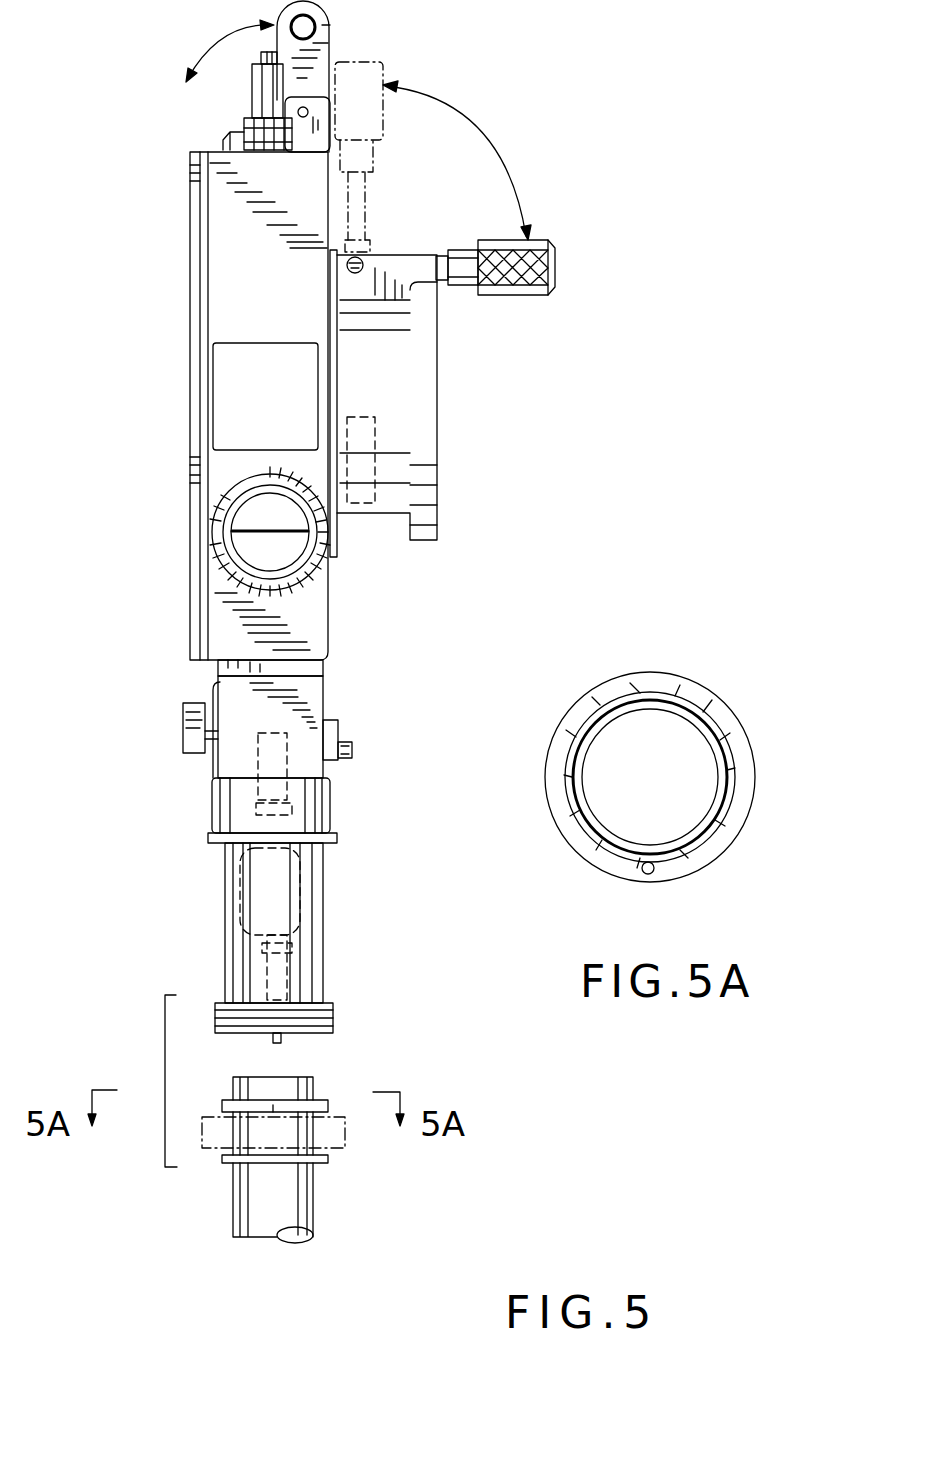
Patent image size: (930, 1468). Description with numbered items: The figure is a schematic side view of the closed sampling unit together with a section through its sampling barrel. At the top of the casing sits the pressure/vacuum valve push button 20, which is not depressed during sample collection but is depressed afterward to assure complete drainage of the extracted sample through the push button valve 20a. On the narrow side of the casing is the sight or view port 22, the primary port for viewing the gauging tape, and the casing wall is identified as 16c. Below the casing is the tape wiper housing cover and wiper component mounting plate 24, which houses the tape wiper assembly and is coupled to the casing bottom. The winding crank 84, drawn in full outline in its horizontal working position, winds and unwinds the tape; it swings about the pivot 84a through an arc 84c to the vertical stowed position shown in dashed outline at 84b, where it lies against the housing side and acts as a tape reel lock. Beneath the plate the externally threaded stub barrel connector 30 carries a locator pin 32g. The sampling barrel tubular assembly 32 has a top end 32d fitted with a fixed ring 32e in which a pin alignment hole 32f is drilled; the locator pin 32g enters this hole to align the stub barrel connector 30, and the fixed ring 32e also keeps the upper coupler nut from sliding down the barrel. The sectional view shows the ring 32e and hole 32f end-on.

In FIG. 5, the instrument body 16c is at (310, 628).
In FIG. 5, the pressure/vacuum valve push button 20 is at (262, 54).
In FIG. 5, the push button valve 20a is at (228, 122).
In FIG. 5, the sight or view port 22 is at (260, 535).
In FIG. 5, the tape wiper housing cover and wiper component mounting plate 24 is at (215, 760).
In FIG. 5, the stub barrel connector 30 is at (318, 918).
In FIG. 5, the sampling barrel tubular assembly 32 is at (315, 1225).
In FIG. 5, the top end of sampling barrel tubular assembly 32d is at (313, 1078).
In FIG. 5, the fixed ring 32e is at (328, 1102).
In FIG. 5A, the fixed ring 32e is at (718, 722).
In FIG. 5, the pin alignment hole 32f is at (273, 1105).
In FIG. 5A, the pin alignment hole 32f is at (655, 871).
In FIG. 5, the locator pin 32g is at (273, 1043).
In FIG. 5, the winding crank 84 is at (557, 262).
In FIG. 5, the pivot 84a is at (368, 260).
In FIG. 5, the stowed position of winding crank handle 84b is at (358, 62).
In FIG. 5, the arc 84c is at (470, 128).